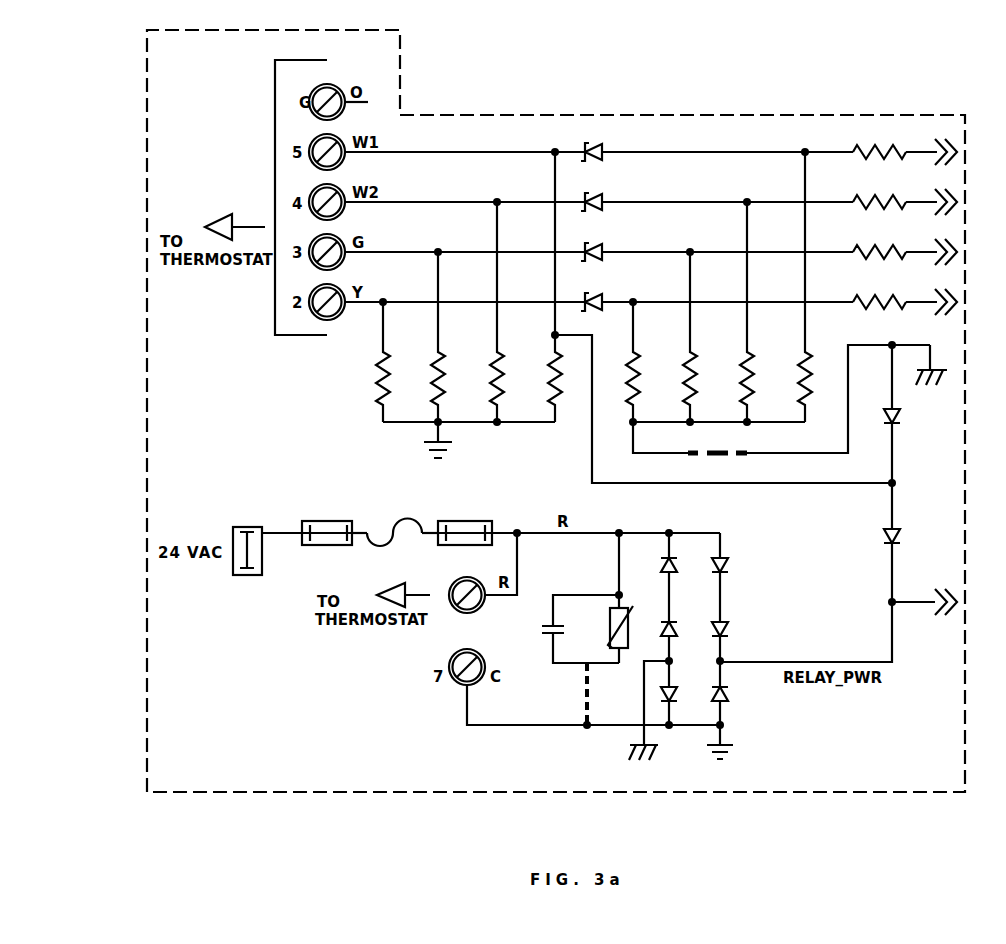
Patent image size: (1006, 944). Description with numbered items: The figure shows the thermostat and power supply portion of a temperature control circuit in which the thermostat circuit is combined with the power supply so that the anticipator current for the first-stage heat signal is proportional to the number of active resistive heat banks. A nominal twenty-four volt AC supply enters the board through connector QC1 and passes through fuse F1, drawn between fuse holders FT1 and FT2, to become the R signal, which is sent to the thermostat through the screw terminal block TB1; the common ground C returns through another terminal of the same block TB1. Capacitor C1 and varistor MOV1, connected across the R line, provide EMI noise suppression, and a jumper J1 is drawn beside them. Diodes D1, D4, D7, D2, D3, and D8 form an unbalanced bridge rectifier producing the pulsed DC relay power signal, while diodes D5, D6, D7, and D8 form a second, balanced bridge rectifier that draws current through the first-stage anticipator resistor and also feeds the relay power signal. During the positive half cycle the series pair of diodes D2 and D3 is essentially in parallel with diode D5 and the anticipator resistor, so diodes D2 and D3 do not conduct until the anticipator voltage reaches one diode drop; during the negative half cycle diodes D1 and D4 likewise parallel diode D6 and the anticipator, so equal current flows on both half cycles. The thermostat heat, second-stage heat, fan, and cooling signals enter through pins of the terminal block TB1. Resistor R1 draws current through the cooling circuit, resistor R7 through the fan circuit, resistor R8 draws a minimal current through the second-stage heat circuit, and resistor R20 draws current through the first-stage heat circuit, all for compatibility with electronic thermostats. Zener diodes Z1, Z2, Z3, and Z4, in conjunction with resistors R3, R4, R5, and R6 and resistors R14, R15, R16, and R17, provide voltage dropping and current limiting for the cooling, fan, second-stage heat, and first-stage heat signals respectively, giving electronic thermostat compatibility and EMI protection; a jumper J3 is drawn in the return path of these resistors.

The screw terminal block TB1 is at (382, 372).
The zener diode Z1 is at (588, 293).
The zener diode Z2 is at (588, 243).
The zener diode Z3 is at (588, 193).
The zener diode Z4 is at (588, 143).
The resistor R1 is at (373, 362).
The resistor R3 is at (622, 362).
The resistor R4 is at (678, 337).
The resistor R5 is at (736, 312).
The resistor R6 is at (794, 287).
The resistor R7 is at (429, 337).
The resistor R8 is at (485, 312).
The resistor R14 is at (879, 292).
The resistor R15 is at (879, 242).
The resistor R16 is at (879, 192).
The resistor R17 is at (879, 142).
The resistor R20 is at (539, 287).
The jumper J3 is at (781, 399).
The jumper J1 is at (574, 694).
The diode D1 is at (657, 577).
The diode D2 is at (736, 577).
The diode D3 is at (736, 654).
The diode D4 is at (680, 645).
The diode D5 is at (810, 572).
The diode D6 is at (880, 414).
The diode D7 is at (680, 696).
The diode D8 is at (736, 716).
The connector QC1 is at (247, 539).
The fuse holder FT1 is at (327, 521).
The fuse holder FT2 is at (465, 521).
The fuse F1 is at (394, 523).
The varistor MOV1 is at (598, 598).
The capacitor C1 is at (573, 629).